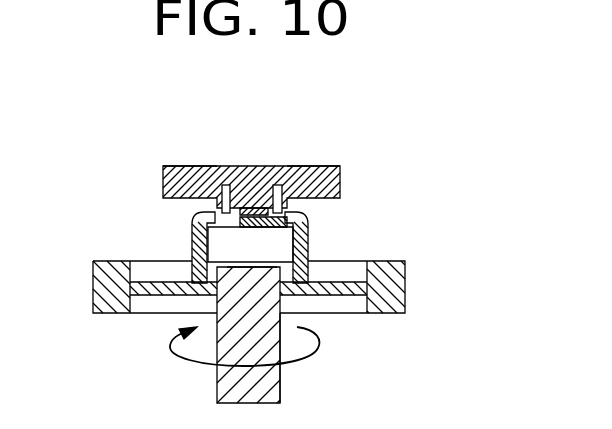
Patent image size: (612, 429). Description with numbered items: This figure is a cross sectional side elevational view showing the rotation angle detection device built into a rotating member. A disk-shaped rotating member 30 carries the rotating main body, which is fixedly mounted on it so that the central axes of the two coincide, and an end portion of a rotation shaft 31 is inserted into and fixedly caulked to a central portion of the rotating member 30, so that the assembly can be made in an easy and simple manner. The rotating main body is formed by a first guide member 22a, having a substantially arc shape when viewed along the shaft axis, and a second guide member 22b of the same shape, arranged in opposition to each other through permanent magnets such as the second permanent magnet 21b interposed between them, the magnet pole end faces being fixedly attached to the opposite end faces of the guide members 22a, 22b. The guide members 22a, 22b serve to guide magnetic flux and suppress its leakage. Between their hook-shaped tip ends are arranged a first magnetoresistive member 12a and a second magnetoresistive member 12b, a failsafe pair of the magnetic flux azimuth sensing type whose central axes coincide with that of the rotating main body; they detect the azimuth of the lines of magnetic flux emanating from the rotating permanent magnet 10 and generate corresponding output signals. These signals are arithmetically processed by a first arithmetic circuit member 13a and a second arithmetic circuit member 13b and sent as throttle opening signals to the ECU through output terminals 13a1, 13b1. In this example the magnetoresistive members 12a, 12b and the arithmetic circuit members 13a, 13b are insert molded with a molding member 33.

The permanent magnet 10 is at (278, 314).
The first magnetoresistive member 12a is at (268, 207).
The second magnetoresistive member 12b is at (248, 237).
The first arithmetic circuit member 13a is at (310, 166).
The output terminal 13a1 is at (277, 166).
The second arithmetic circuit member 13b is at (190, 166).
The output terminal 13b1 is at (227, 166).
The second permanent magnet 21b is at (238, 262).
The first guide member 22a is at (308, 240).
The second guide member 22b is at (192, 268).
The rotating member 30 is at (405, 296).
The rotation shaft 31 is at (222, 390).
The molding member 33 is at (340, 182).